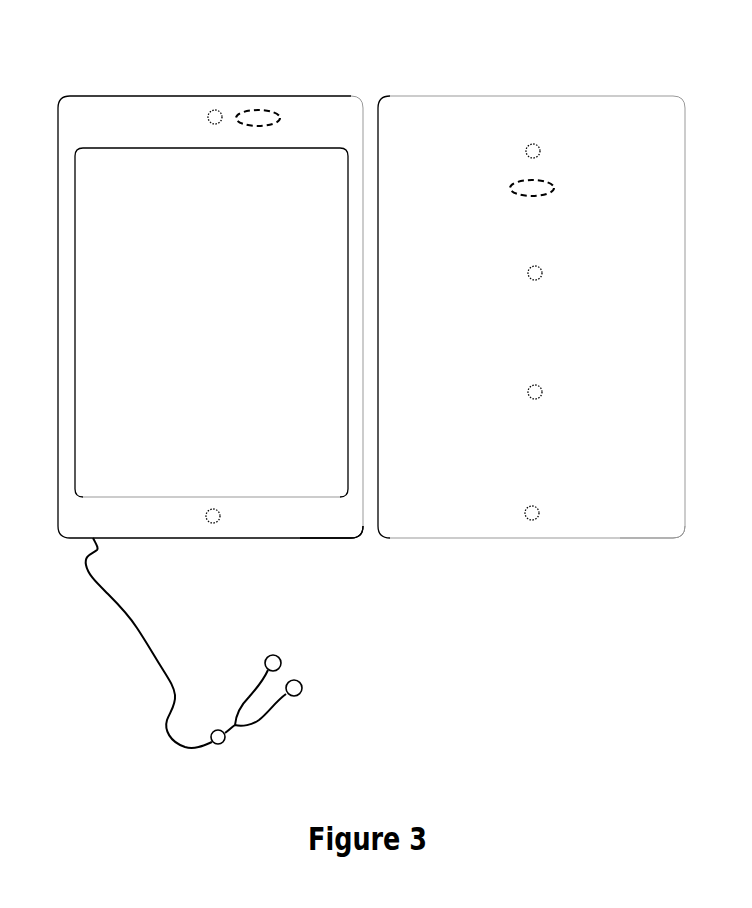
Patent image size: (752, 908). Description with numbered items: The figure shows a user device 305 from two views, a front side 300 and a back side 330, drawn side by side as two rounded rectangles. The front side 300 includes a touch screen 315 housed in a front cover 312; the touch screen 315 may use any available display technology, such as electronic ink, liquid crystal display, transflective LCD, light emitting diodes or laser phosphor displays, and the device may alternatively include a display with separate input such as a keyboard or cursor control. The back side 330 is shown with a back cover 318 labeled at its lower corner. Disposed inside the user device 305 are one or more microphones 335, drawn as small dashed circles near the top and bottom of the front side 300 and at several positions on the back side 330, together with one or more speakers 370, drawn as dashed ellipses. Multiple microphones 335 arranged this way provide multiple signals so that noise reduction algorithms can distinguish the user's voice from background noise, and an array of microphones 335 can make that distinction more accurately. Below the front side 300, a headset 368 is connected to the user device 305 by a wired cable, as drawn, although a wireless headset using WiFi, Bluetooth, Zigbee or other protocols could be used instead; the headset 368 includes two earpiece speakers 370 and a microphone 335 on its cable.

The front side 300 is at (245, 40).
The back side 330 is at (563, 40).
The user device 305 is at (371, 282).
The touch screen 315 is at (257, 330).
The front cover 312 is at (347, 539).
The back cover 318 is at (664, 539).
The headset 368 is at (150, 651).
The microphones 335 is at (208, 118).
The speakers 370 is at (280, 118).